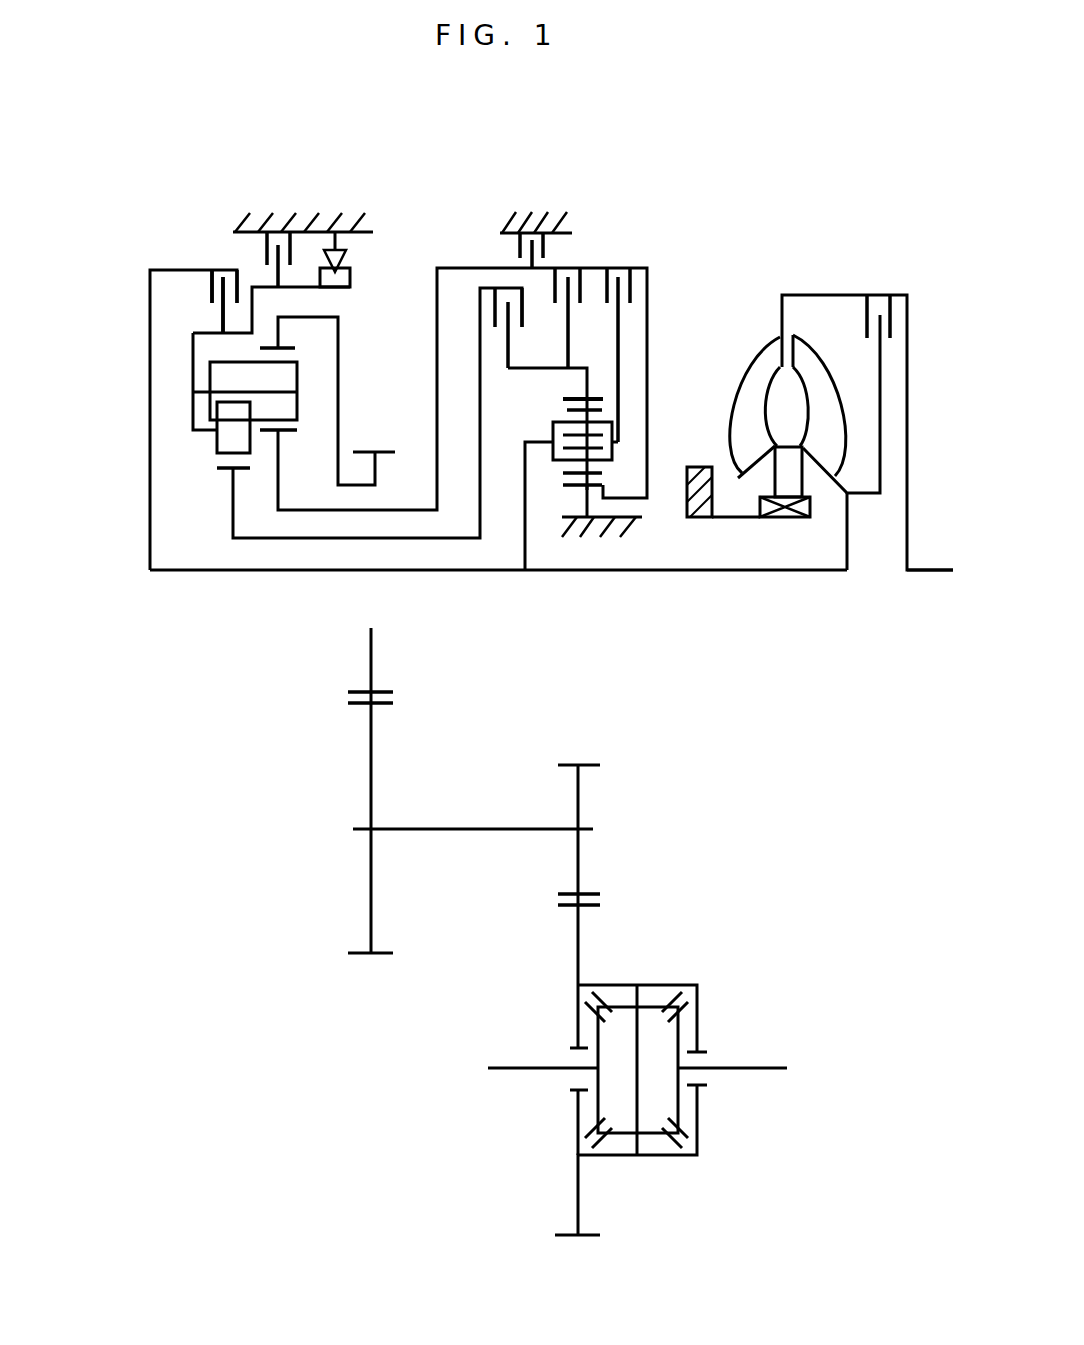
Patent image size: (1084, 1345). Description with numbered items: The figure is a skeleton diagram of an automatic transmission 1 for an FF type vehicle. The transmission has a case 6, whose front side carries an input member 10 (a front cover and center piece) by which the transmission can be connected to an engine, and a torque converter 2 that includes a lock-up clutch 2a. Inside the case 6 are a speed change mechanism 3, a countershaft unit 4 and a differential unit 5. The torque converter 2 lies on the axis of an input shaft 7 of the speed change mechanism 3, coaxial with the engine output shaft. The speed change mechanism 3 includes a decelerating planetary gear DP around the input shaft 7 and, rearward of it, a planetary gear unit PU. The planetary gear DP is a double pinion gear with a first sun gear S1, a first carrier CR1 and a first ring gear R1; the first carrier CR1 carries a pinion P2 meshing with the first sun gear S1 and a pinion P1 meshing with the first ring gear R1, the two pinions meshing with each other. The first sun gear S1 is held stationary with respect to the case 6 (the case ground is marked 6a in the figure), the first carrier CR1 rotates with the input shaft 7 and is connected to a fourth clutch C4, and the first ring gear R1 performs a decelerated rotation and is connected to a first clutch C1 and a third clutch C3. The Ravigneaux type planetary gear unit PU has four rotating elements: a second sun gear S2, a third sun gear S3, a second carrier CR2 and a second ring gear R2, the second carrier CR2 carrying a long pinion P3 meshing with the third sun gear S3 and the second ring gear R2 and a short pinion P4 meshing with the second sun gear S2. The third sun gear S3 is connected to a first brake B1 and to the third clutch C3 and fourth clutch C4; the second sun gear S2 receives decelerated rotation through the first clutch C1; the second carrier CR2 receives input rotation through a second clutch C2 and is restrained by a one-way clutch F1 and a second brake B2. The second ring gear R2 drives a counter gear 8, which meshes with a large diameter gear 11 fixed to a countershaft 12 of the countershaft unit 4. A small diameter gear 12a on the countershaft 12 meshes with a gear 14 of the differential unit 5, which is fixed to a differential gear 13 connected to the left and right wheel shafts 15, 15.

The automatic transmission 1 is at (715, 197).
The torque converter 2 is at (793, 284).
The lock-up clutch 2a is at (890, 323).
The speed change mechanism 3 is at (434, 222).
The countershaft unit 4 is at (348, 808).
The differential unit 5 is at (728, 969).
The case 6 is at (238, 228).
The case 6a is at (625, 523).
The input shaft 7 is at (627, 572).
The counter gear 8 is at (385, 447).
The input member 10 is at (927, 567).
The large diameter gear 11 is at (374, 742).
The countershaft 12 is at (467, 832).
The small diameter gear 12a is at (580, 787).
The differential gear 13 is at (667, 1157).
The gear 14 is at (580, 935).
The wheel shafts 15 is at (517, 1073).
The planetary gear unit PU is at (152, 355).
The planetary gear DP is at (597, 388).
The first brake B1 is at (528, 223).
The second brake B2 is at (278, 234).
The first clutch C1 is at (541, 389).
The second clutch C2 is at (225, 287).
The third clutch C3 is at (566, 302).
The fourth clutch C4 is at (615, 339).
The one-way clutch F1 is at (334, 234).
The first carrier CR1 is at (613, 448).
The second carrier CR2 is at (185, 369).
The first ring gear R1 is at (577, 395).
The second ring gear R2 is at (298, 346).
The first sun gear S1 is at (578, 495).
The second sun gear S2 is at (225, 469).
The third sun gear S3 is at (287, 432).
The pinion P1 is at (567, 413).
The pinion P2 is at (567, 465).
The long pinion P3 is at (303, 378).
The short pinion P4 is at (215, 441).